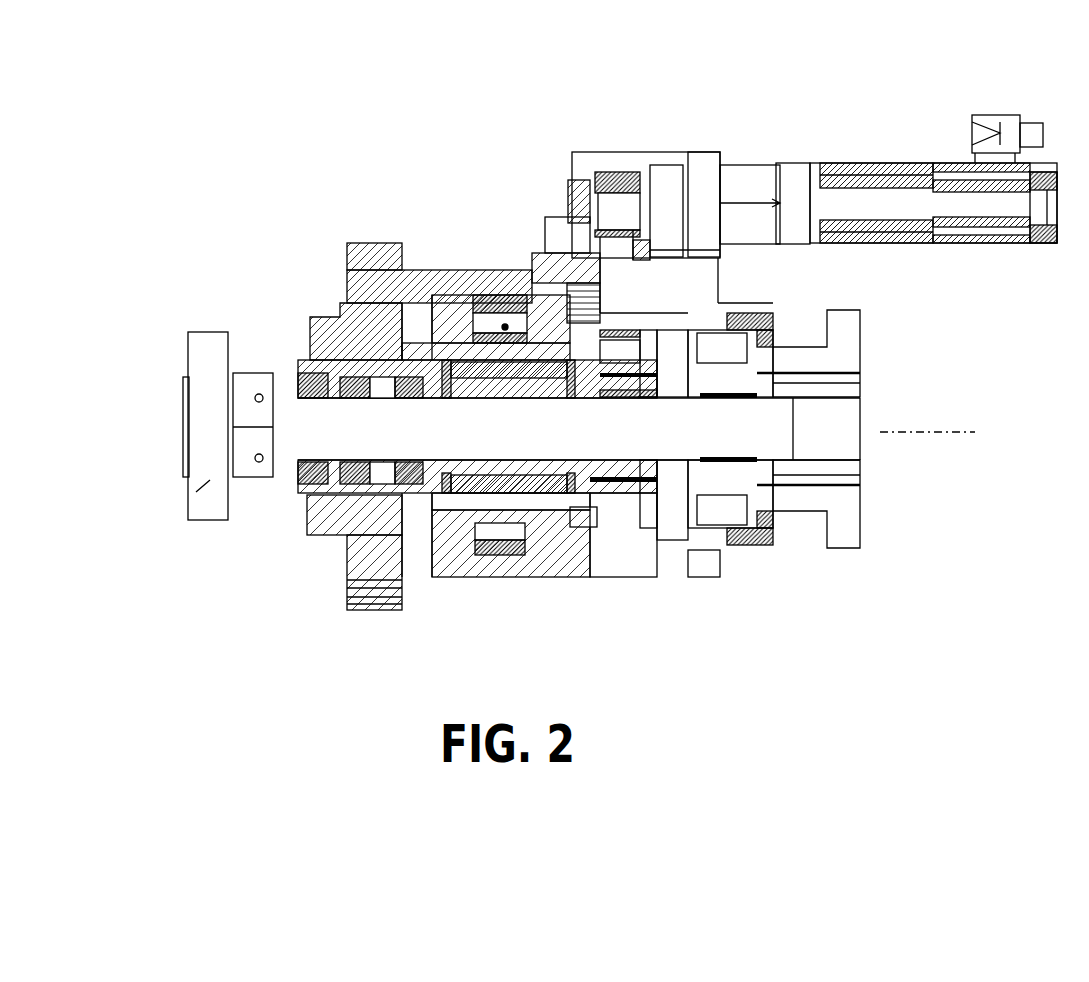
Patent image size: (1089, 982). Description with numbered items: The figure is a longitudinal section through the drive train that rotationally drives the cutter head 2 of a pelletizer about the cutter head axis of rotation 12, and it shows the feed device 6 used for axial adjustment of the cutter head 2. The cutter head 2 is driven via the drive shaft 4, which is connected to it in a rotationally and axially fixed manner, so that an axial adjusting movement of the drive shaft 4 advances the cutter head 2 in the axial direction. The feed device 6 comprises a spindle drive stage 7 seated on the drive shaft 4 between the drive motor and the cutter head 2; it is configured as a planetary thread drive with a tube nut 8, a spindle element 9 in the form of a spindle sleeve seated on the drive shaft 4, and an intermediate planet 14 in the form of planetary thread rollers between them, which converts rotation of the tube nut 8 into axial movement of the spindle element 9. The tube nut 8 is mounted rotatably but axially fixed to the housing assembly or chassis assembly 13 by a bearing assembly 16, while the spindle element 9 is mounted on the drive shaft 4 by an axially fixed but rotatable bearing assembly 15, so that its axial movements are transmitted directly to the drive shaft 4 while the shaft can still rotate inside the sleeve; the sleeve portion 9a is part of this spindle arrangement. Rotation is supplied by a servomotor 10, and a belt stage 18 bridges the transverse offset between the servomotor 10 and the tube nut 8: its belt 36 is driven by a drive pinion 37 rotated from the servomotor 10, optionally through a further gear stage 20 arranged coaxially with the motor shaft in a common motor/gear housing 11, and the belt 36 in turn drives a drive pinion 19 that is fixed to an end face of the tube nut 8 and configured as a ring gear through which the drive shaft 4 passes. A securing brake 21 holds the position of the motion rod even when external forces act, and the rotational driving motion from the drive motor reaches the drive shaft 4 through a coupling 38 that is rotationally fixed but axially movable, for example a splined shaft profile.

The cutter head 2 is at (138, 446).
The drive shaft 4 is at (307, 415).
The feed device 6 is at (886, 137).
The spindle drive stage 7 is at (505, 327).
The tube nut 8 is at (422, 528).
The spindle element 9 is at (507, 387).
The bearing sleeve 9a is at (317, 367).
The servomotor 10 is at (865, 160).
The housing 11 is at (659, 166).
The cutter head axis of rotation 12 is at (916, 434).
The housing assembly and/or chassis assembly 13 is at (348, 596).
The intermediate planet 14 is at (467, 373).
The bearing assembly 15 is at (292, 482).
The bearing assembly 16 is at (455, 530).
The belt stage 18 is at (650, 272).
The drive pinion 19 is at (660, 500).
The gear stage 20 is at (755, 188).
The securing brake 21 is at (780, 157).
The belt 36 is at (613, 277).
The drive pinion 37 is at (607, 153).
The coupling 38 is at (733, 460).